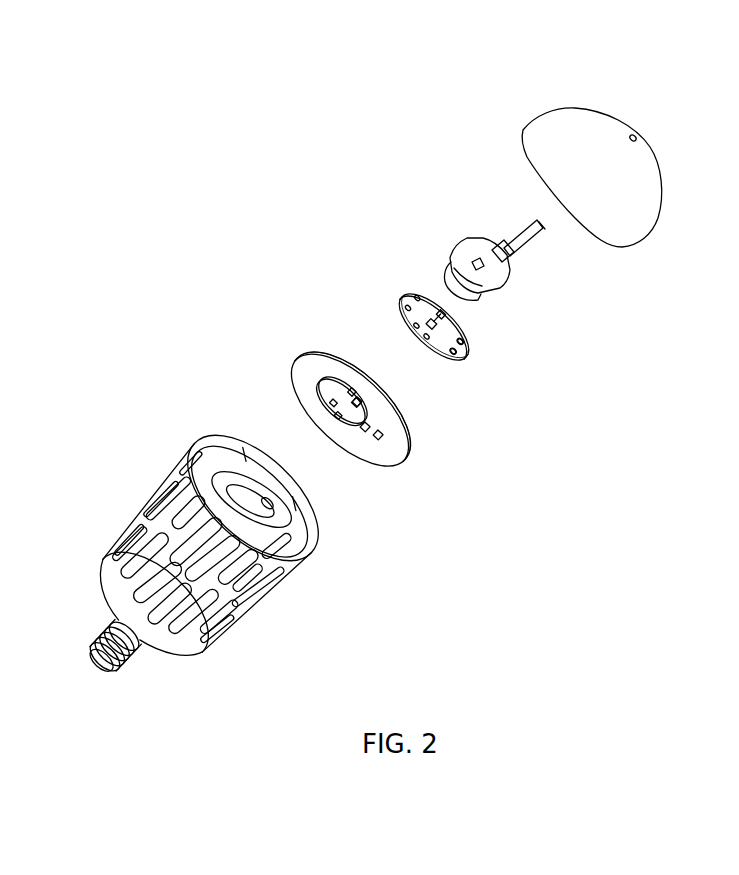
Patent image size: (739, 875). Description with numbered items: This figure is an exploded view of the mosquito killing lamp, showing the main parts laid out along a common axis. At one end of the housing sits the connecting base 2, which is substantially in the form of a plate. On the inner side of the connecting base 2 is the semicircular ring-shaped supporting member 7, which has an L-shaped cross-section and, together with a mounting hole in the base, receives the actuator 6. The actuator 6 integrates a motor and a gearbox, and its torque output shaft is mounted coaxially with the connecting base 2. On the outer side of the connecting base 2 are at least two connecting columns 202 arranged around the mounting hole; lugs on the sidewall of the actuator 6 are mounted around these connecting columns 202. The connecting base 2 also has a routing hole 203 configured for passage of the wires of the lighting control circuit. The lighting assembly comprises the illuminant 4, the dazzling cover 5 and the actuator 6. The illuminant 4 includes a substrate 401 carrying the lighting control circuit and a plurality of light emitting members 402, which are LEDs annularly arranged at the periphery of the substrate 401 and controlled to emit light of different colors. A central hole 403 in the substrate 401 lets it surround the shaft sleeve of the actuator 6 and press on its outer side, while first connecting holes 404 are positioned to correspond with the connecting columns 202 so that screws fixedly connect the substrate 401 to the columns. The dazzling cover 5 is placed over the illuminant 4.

The connecting base 2 is at (311, 362).
The connecting column 202 is at (297, 380).
The routing hole 203 is at (366, 426).
The supporting member 7 is at (358, 403).
The illuminant 4 is at (402, 292).
The substrate 401 is at (465, 328).
The light emitting member 402 is at (470, 356).
The central hole 403 is at (444, 316).
The first connecting hole 404 is at (434, 312).
The actuator 6 is at (478, 235).
The dazzling cover 5 is at (608, 132).